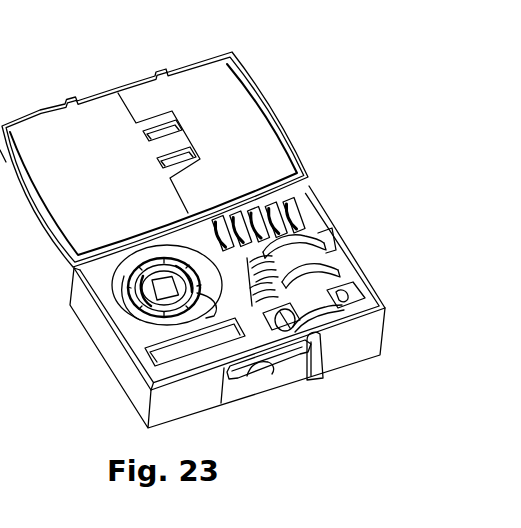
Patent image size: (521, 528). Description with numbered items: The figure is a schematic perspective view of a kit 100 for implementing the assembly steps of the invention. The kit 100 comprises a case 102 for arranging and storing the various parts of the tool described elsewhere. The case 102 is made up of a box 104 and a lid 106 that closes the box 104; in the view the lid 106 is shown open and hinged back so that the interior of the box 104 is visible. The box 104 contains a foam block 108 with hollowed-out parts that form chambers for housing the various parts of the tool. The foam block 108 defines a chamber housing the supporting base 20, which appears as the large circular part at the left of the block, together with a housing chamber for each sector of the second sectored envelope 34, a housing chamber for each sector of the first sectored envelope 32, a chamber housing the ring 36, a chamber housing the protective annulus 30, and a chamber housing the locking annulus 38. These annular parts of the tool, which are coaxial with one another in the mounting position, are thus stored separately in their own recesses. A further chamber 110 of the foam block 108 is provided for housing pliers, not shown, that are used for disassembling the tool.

The kit 100 is at (322, 98).
The case 102 is at (315, 186).
The box 104 is at (190, 403).
The lid 106 is at (263, 100).
The foam block 108 is at (100, 268).
The supporting base 20 is at (148, 313).
The chamber 110 is at (163, 367).
The second sectored envelope 34 is at (300, 212).
The ring 36 is at (312, 247).
The protective annulus 30 is at (320, 263).
The first sectored envelope 32 is at (260, 343).
The locking annulus 38 is at (320, 333).